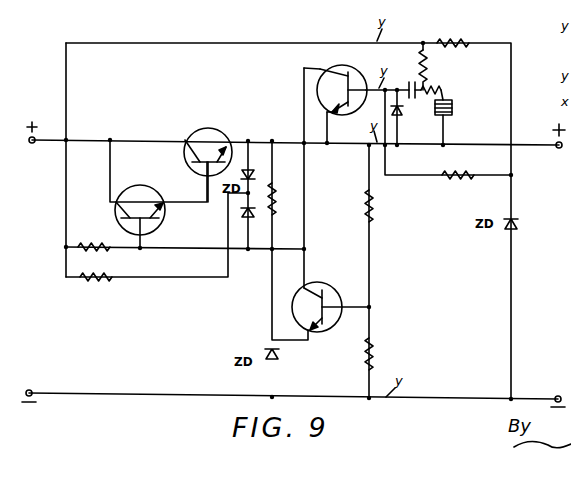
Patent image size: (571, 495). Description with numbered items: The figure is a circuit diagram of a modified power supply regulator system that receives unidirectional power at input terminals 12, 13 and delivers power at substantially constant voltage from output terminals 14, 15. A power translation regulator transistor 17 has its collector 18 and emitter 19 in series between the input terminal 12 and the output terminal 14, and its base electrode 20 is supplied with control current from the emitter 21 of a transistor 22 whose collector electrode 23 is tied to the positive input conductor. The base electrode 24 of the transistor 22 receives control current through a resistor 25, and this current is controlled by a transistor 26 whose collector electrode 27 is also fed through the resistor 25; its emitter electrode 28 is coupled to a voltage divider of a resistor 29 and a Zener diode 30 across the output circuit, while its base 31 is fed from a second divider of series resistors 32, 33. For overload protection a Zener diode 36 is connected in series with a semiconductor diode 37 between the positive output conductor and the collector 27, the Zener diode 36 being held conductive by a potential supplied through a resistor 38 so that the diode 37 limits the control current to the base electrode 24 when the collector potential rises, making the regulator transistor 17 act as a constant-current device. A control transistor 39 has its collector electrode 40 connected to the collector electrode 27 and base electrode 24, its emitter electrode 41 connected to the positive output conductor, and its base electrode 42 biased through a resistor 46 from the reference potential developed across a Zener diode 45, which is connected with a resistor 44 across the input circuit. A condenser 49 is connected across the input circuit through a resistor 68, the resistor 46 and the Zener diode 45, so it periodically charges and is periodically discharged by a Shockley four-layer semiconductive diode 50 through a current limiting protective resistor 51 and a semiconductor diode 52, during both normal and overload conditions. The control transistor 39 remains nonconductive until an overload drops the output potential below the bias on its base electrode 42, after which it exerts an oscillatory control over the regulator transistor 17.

The input terminal 12 is at (31, 144).
The input terminal 13 is at (30, 389).
The output terminal 14 is at (559, 149).
The output terminal 15 is at (558, 395).
The power translation regulator transistor 17 is at (204, 150).
The collector 18 is at (184, 154).
The emitter 19 is at (224, 132).
The base electrode 20 is at (194, 171).
The emitter 21 is at (164, 216).
The transistor 22 is at (158, 224).
The collector electrode 23 is at (154, 216).
The base electrode 24 is at (147, 240).
The resistor 25 is at (86, 245).
The transistor 26 is at (323, 305).
The collector electrode 27 is at (301, 294).
The emitter electrode 28 is at (318, 325).
The resistor 29 is at (279, 201).
The Zener diode 30 is at (278, 354).
The base 31 is at (340, 295).
The resistor 32 is at (374, 207).
The resistor 33 is at (375, 342).
The Zener diode 36 is at (256, 175).
The semiconductor diode 37 is at (258, 212).
The resistor 38 is at (93, 280).
The control transistor 39 is at (328, 65).
The collector electrode 40 is at (319, 78).
The emitter electrode 41 is at (319, 98).
The base electrode 42 is at (372, 78).
The resistor 44 is at (456, 42).
The Zener diode 45 is at (516, 222).
The resistor 46 is at (459, 180).
The condenser 49 is at (411, 76).
The Shockley 4-layer semiconductive diode 50 is at (453, 107).
The current limiting protective resistor 51 is at (437, 88).
The semiconductor diode 52 is at (403, 110).
The resistor 68 is at (423, 45).